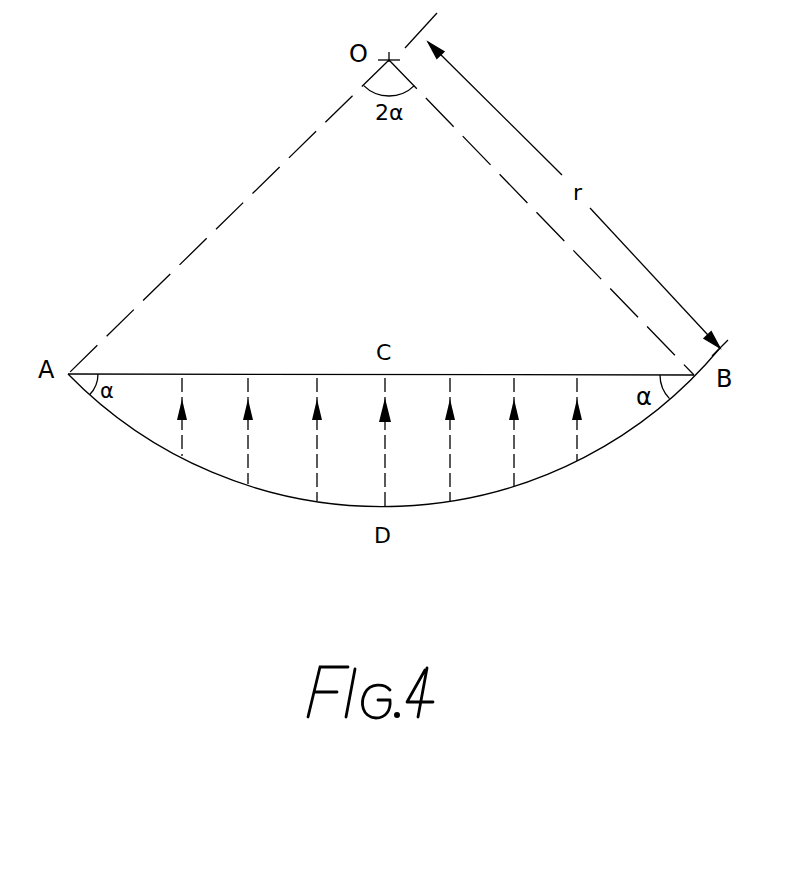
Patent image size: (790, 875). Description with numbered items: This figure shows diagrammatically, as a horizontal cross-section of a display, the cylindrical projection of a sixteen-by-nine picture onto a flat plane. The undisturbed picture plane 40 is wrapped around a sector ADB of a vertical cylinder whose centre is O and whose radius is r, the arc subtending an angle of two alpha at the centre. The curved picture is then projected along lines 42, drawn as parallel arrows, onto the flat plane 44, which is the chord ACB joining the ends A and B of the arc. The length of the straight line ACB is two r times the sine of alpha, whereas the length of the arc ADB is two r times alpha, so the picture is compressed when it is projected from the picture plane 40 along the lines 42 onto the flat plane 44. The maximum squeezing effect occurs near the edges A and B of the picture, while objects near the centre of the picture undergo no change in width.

The picture plane 40 is at (172, 456).
The projection lines 42 is at (514, 468).
The flat plane 44 is at (207, 375).